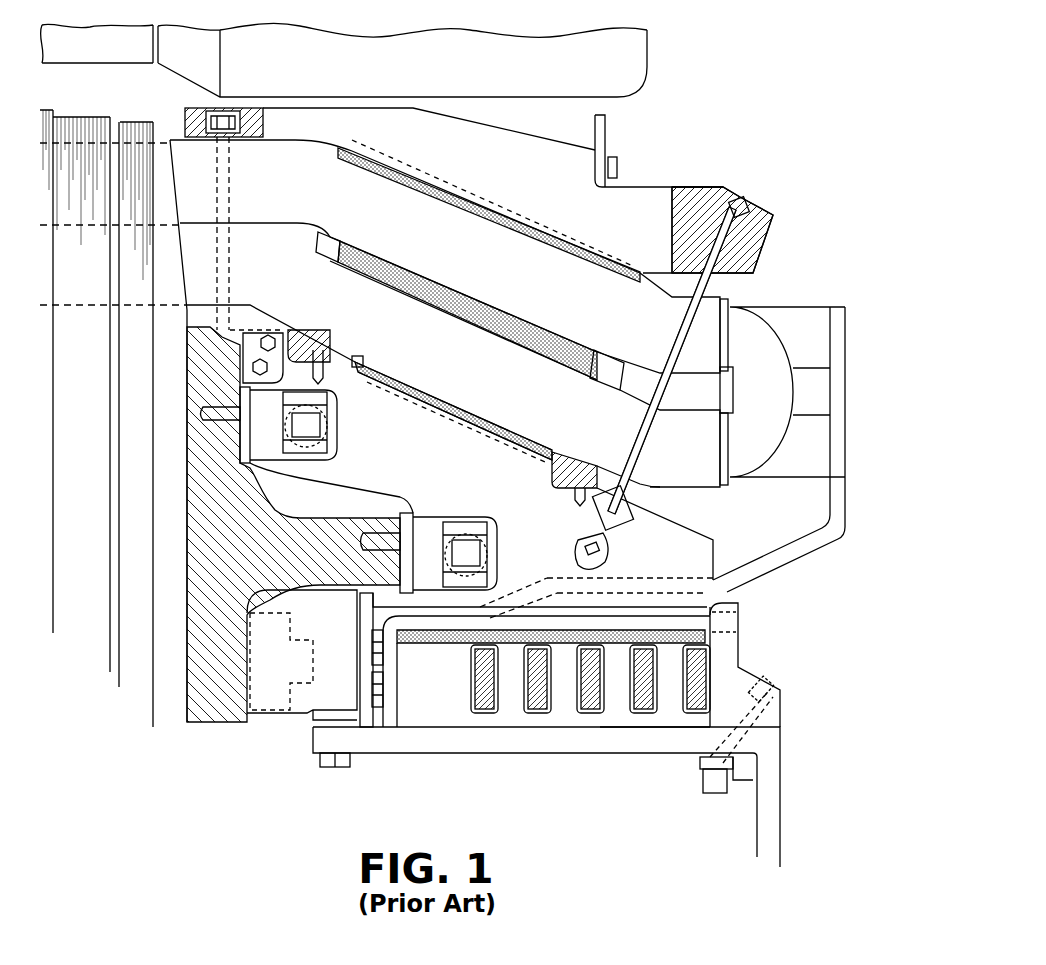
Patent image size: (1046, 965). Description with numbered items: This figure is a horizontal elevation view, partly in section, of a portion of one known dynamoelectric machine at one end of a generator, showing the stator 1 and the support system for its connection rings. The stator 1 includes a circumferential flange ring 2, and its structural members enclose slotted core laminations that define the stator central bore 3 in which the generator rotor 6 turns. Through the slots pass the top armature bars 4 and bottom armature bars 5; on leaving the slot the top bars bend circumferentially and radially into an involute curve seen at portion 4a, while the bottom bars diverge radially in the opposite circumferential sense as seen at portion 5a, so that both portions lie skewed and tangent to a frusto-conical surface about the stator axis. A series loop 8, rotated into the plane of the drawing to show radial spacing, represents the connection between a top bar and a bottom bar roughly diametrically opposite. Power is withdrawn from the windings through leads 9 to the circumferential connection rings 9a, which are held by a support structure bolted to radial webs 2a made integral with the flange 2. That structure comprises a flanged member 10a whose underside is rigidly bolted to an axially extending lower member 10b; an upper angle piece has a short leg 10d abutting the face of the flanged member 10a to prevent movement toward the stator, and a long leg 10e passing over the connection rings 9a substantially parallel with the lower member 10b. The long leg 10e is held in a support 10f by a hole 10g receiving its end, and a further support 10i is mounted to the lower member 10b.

The stator 1 is at (70, 444).
The circumferential flange ring 2 is at (225, 703).
The radial webs 2a is at (297, 710).
The stator central bore 3 is at (82, 122).
The top armature bars 4 is at (264, 189).
The involute portion of top bars 4a is at (448, 256).
The bottom armature bars 5 is at (254, 274).
The involute portion of bottom bars 5a is at (432, 362).
The generator rotor 6 is at (104, 54).
The series loop 8 is at (785, 397).
The leads 9 is at (793, 548).
The circumferential connection rings 9a is at (687, 662).
The flanged member 10a is at (363, 720).
The axially extending lower member 10b is at (413, 740).
The short leg 10d is at (387, 670).
The long leg of upper angle piece 10e is at (618, 608).
The support 10f is at (781, 710).
The hole 10g is at (738, 599).
The support 10i is at (693, 718).